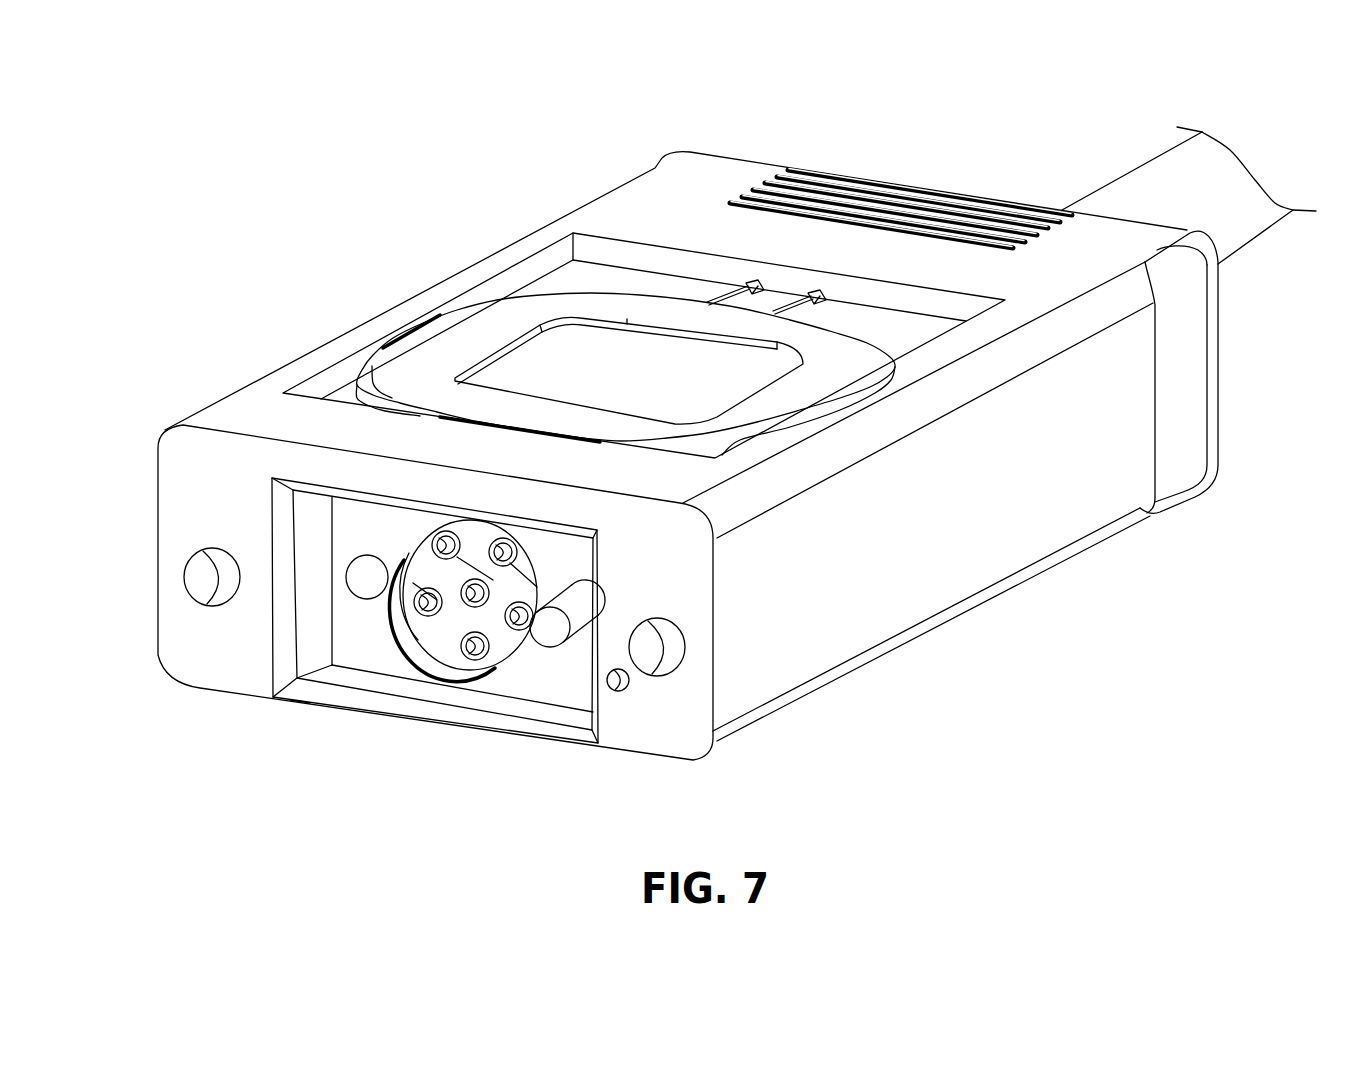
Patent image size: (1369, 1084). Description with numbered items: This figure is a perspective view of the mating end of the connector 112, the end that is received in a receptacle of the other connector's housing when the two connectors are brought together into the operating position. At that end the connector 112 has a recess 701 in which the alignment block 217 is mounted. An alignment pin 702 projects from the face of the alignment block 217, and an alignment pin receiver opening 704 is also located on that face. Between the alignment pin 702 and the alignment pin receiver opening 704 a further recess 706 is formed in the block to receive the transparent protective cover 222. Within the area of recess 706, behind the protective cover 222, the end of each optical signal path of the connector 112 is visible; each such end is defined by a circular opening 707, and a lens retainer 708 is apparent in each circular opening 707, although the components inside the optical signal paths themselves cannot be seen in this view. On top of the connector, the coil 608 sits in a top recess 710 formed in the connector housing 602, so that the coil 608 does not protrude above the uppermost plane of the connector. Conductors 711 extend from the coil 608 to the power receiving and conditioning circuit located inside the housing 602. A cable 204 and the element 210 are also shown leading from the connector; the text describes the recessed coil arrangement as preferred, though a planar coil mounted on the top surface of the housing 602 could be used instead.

The connector 112 is at (1055, 614).
The cable 204 is at (1160, 168).
The connector insert 210 is at (353, 622).
The alignment block 217 is at (530, 670).
The protective cover 222 is at (300, 702).
The connector housing 602 is at (857, 612).
The coil 608 is at (441, 355).
The recess 701 is at (384, 676).
The alignment pin 702 is at (553, 635).
The alignment pin receiver opening 704 is at (363, 582).
The recess 706 is at (430, 625).
The circular opening 707 is at (480, 665).
The lens retainer 708 is at (467, 655).
The top recess 710 is at (318, 383).
The conductors 711 is at (790, 298).